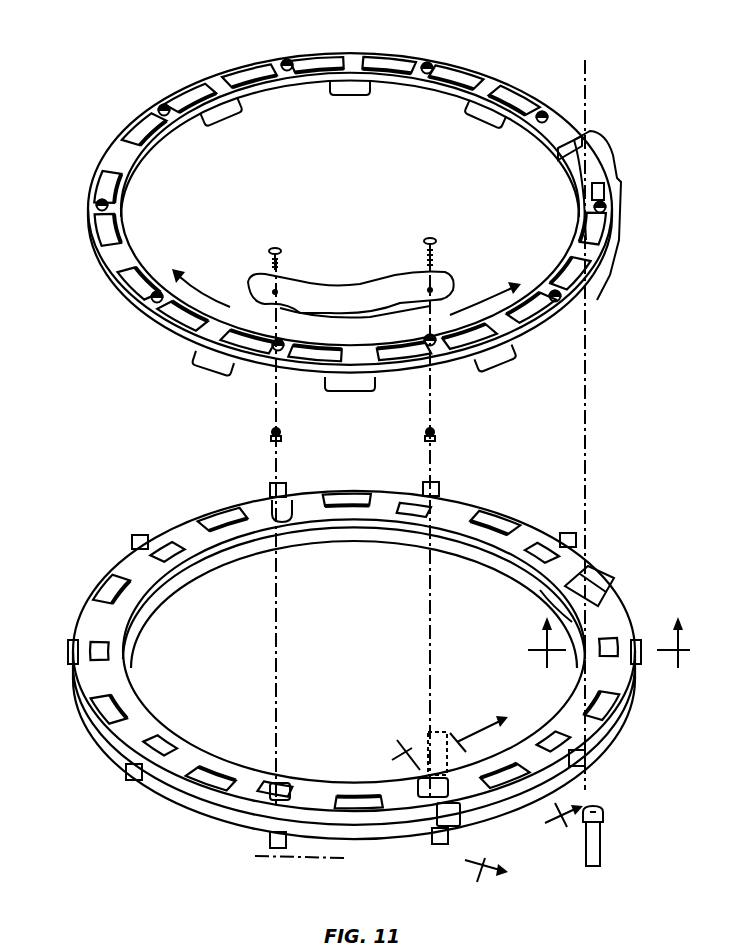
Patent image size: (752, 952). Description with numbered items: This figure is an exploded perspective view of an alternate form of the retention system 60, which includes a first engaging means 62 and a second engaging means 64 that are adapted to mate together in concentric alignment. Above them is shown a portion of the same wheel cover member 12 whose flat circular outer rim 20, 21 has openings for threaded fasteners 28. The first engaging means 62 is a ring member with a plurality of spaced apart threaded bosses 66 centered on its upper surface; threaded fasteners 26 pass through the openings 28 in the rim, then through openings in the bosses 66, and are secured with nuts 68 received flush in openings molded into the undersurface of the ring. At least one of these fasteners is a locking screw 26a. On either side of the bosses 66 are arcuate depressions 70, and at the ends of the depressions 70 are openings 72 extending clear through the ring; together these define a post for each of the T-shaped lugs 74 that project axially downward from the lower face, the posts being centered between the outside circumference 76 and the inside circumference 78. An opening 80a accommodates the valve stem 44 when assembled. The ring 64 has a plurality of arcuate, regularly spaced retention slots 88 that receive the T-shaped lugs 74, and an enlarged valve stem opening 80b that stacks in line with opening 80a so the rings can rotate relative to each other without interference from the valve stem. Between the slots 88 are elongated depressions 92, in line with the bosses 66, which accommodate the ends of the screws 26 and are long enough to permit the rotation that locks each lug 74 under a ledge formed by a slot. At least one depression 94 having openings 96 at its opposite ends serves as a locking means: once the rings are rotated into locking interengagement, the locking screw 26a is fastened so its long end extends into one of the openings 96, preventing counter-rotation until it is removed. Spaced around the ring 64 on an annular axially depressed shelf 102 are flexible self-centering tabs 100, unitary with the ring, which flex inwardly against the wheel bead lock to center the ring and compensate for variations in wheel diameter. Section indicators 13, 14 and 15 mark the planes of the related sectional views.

The wheel cover member 12 is at (348, 270).
The circular outer rim 20 is at (351, 261).
The circular outer rim 21 is at (385, 285).
The threaded fasteners 26 is at (274, 248).
The locking screw 26a is at (434, 240).
The openings for threaded fasteners 28 is at (270, 288).
The valve stem 44 is at (612, 834).
The retention system 60 is at (160, 52).
The first engaging means 62 is at (110, 278).
The second engaging means 64 is at (80, 625).
The threaded bosses 66 is at (425, 63).
The nuts 68 is at (270, 432).
The arcuate depressions 70 is at (86, 206).
The openings 72 is at (385, 345).
The T-shaped lugs 74 is at (230, 112).
The outside circumference 76 is at (466, 70).
The inside circumference 78 is at (440, 96).
The valve stem opening 80a is at (612, 140).
The enlarged valve stem opening 80b is at (612, 585).
The retention slots 88 is at (225, 510).
The elongated depressions 92 is at (442, 505).
The depression 94 is at (286, 527).
The openings 96 is at (462, 812).
The flexible self-centering tabs 100 is at (283, 482).
The annular axially depressed shelf 102 is at (80, 710).
The section line 13- 13 is at (436, 809).
The section line 14- 14 is at (516, 775).
The section line 15- 15 is at (614, 646).